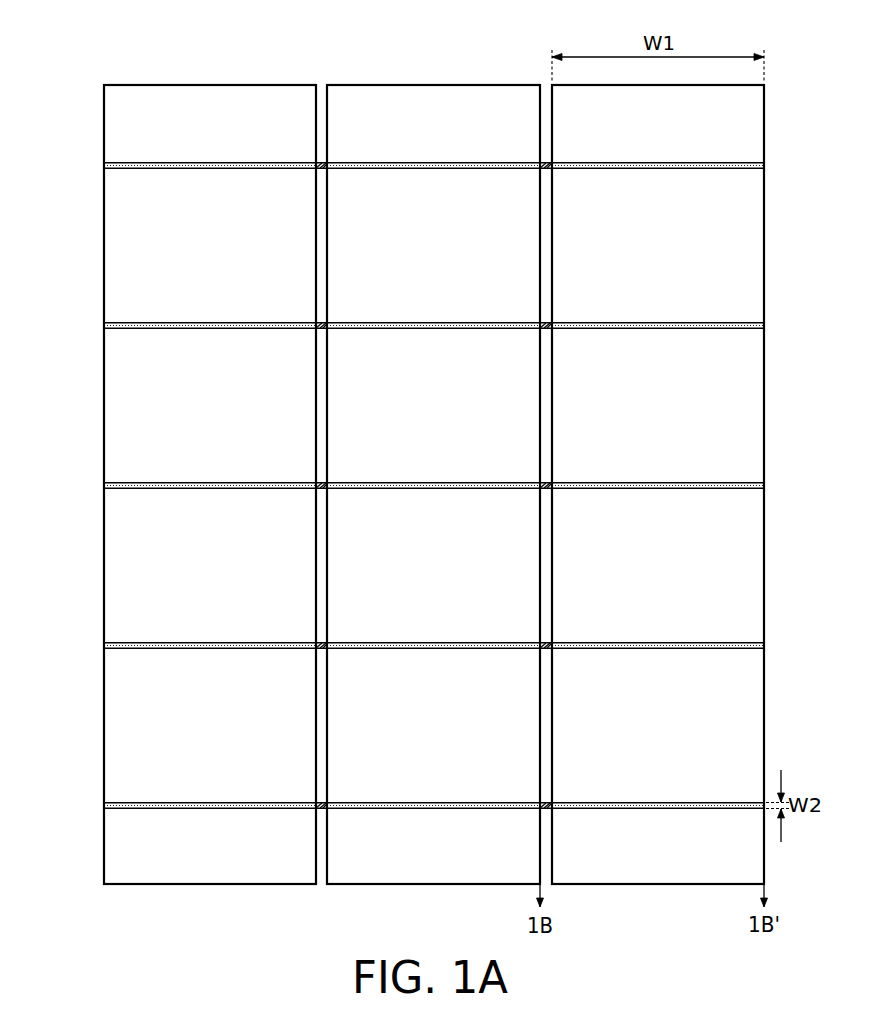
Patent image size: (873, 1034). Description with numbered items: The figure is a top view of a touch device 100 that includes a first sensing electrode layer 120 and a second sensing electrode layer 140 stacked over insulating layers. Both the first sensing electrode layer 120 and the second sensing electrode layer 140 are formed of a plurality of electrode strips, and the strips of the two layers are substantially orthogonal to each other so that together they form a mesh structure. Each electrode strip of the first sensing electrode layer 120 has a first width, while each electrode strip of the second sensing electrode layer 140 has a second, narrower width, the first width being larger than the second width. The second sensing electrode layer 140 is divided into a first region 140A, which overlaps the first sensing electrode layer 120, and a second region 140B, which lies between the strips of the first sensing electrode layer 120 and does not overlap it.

The touch device 100 is at (58, 52).
The first sensing electrode layer 120 is at (755, 250).
The second sensing electrode layer 140 is at (764, 165).
The first region 140A is at (675, 808).
The second region 140B is at (546, 810).